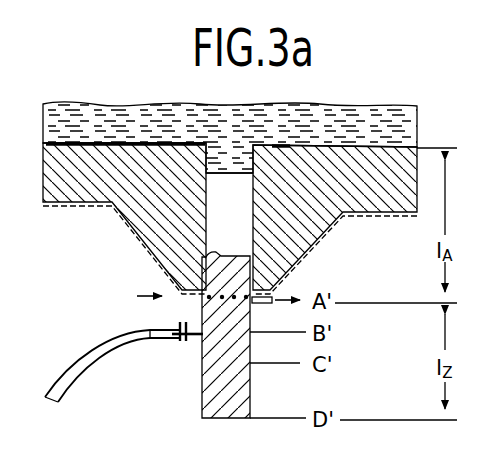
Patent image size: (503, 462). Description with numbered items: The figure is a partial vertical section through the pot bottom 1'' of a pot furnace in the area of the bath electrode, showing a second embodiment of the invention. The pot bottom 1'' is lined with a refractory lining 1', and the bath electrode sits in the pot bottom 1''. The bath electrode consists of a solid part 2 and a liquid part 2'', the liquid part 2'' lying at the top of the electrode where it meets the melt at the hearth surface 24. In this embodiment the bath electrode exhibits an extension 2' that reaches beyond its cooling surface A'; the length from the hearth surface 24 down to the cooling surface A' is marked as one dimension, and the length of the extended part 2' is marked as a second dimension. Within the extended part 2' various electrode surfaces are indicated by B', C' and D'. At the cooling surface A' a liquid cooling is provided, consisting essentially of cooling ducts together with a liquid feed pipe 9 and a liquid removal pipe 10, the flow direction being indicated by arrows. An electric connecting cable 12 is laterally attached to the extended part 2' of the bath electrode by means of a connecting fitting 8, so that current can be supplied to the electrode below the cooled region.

The refractory lining 1' is at (230, 120).
The pot bottom 1'' is at (230, 250).
The solid part of bath electrode 2 is at (230, 216).
The extension of bath electrode 2' is at (194, 337).
The liquid part of bath electrode 2'' is at (244, 124).
The hearth surface 24 is at (167, 143).
The liquid feed pipe 9 is at (182, 294).
The liquid removal pipe 10 is at (262, 303).
The connection fitting 8 is at (197, 332).
The electric connecting cable 12 is at (73, 377).